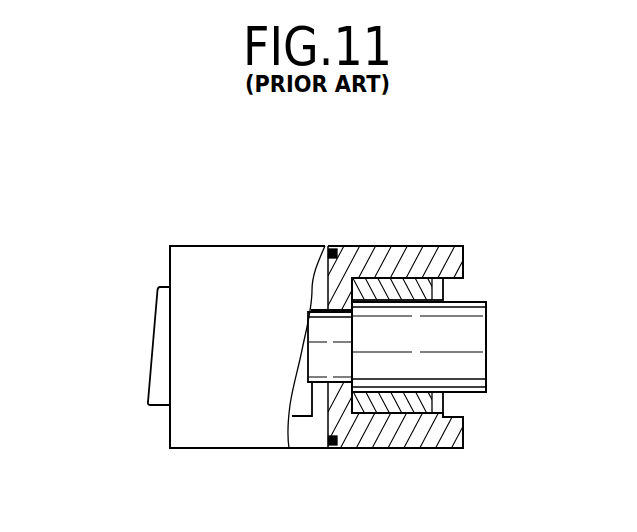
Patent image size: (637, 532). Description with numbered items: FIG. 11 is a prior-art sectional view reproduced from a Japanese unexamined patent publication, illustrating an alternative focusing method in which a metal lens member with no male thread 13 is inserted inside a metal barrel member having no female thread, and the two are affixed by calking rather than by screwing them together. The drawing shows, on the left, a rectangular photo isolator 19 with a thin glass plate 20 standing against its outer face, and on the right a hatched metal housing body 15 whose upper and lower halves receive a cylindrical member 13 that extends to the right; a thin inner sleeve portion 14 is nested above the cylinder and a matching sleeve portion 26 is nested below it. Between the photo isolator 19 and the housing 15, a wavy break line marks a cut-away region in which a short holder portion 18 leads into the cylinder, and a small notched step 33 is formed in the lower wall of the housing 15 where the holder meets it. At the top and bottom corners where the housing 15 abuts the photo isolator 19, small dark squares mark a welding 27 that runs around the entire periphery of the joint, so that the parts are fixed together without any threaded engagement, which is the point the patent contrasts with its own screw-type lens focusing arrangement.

The male thread 13 is at (475, 328).
The sleeve 14 is at (422, 290).
The housing 15 is at (400, 250).
The holder 18 is at (302, 393).
The photo isolator 19 is at (227, 253).
The glass plate 20 is at (163, 323).
The sleeve portion 26 is at (444, 411).
The welding (entire periphery) 27 is at (332, 248).
The step 33 is at (340, 393).